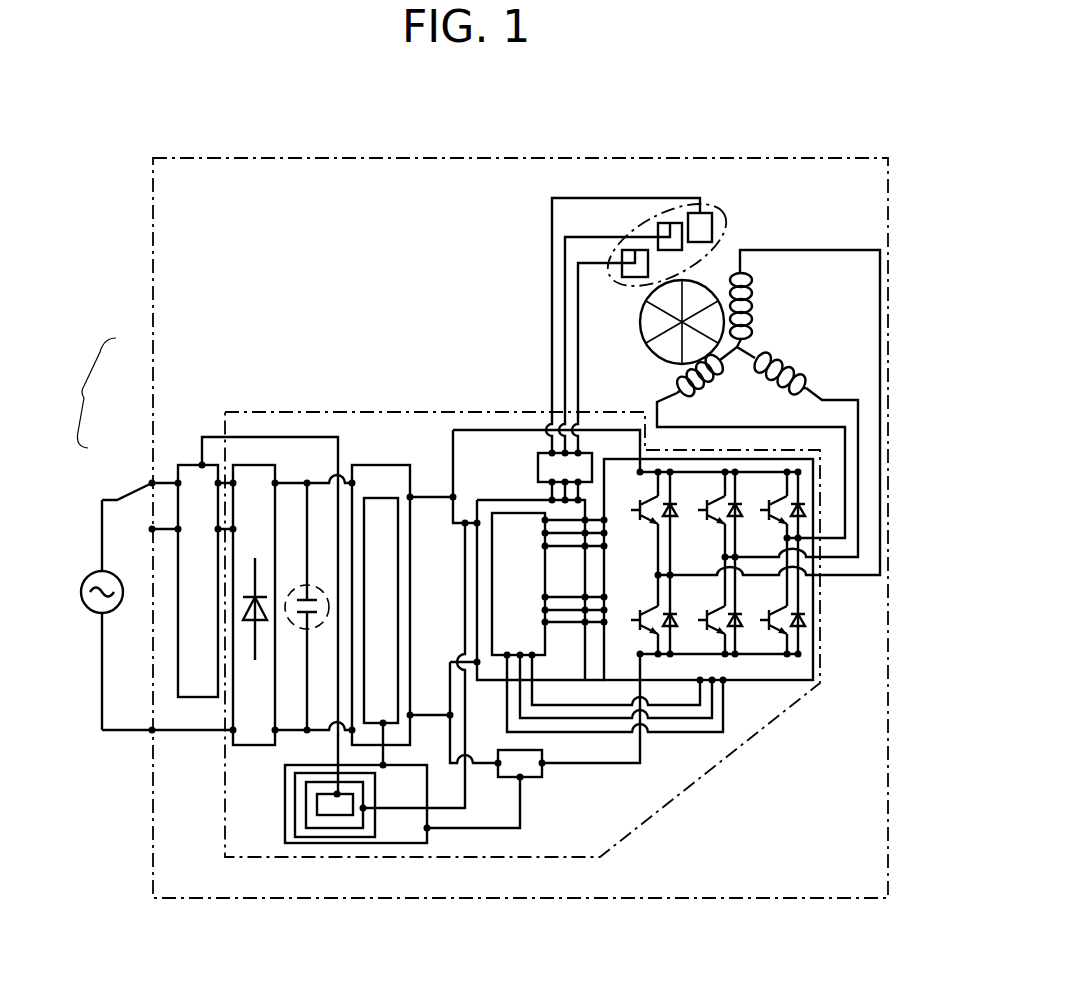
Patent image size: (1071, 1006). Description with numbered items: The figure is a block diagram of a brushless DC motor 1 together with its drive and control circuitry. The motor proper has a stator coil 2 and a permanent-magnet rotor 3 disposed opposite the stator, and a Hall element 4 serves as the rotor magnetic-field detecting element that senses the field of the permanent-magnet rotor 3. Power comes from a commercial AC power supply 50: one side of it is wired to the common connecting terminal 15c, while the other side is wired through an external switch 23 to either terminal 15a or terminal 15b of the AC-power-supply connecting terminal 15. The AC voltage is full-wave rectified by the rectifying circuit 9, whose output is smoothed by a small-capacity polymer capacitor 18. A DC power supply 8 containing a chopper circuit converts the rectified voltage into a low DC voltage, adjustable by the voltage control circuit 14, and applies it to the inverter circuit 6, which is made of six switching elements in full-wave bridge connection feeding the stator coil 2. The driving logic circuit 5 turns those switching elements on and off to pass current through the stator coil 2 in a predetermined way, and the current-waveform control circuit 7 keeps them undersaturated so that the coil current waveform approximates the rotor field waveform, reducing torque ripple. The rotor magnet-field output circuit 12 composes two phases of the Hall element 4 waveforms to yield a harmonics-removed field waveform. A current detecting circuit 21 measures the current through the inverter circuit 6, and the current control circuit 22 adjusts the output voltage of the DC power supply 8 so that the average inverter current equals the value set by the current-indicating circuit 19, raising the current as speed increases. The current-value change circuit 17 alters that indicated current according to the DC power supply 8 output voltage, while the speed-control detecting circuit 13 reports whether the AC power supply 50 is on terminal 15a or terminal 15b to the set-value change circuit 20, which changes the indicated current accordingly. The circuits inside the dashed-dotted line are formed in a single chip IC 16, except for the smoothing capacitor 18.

The brushless DC motor 1 is at (516, 157).
The stator coil 2 is at (722, 377).
The permanent-magnet rotor 3 is at (640, 308).
The Hall element 4 is at (720, 212).
The driving logic circuit 5 is at (573, 670).
The inverter circuit 6 is at (813, 658).
The current-waveform control circuit 7 is at (510, 630).
The DC power supply 8 is at (367, 465).
The rectifying circuit 9 is at (257, 747).
The rotor magnet-field output circuit 12 is at (547, 453).
The speed-control detecting circuit 13 is at (183, 665).
The voltage control circuit 14 is at (388, 498).
The AC-power-supply connecting terminal 15 is at (79, 393).
The terminal 15a is at (152, 483).
The terminal 15b is at (152, 529).
The common connecting terminal 15c is at (152, 732).
The single chip IC 16 is at (245, 410).
The current-value change circuit 17 is at (313, 828).
The polymer capacitor 18 is at (298, 580).
The current-indicating circuit 19 is at (372, 840).
The set-value change circuit 20 is at (332, 815).
The current detecting circuit 21 is at (512, 768).
The current control circuit 22 is at (417, 843).
The external switch 23 is at (120, 495).
The AC power supply 50 is at (86, 580).